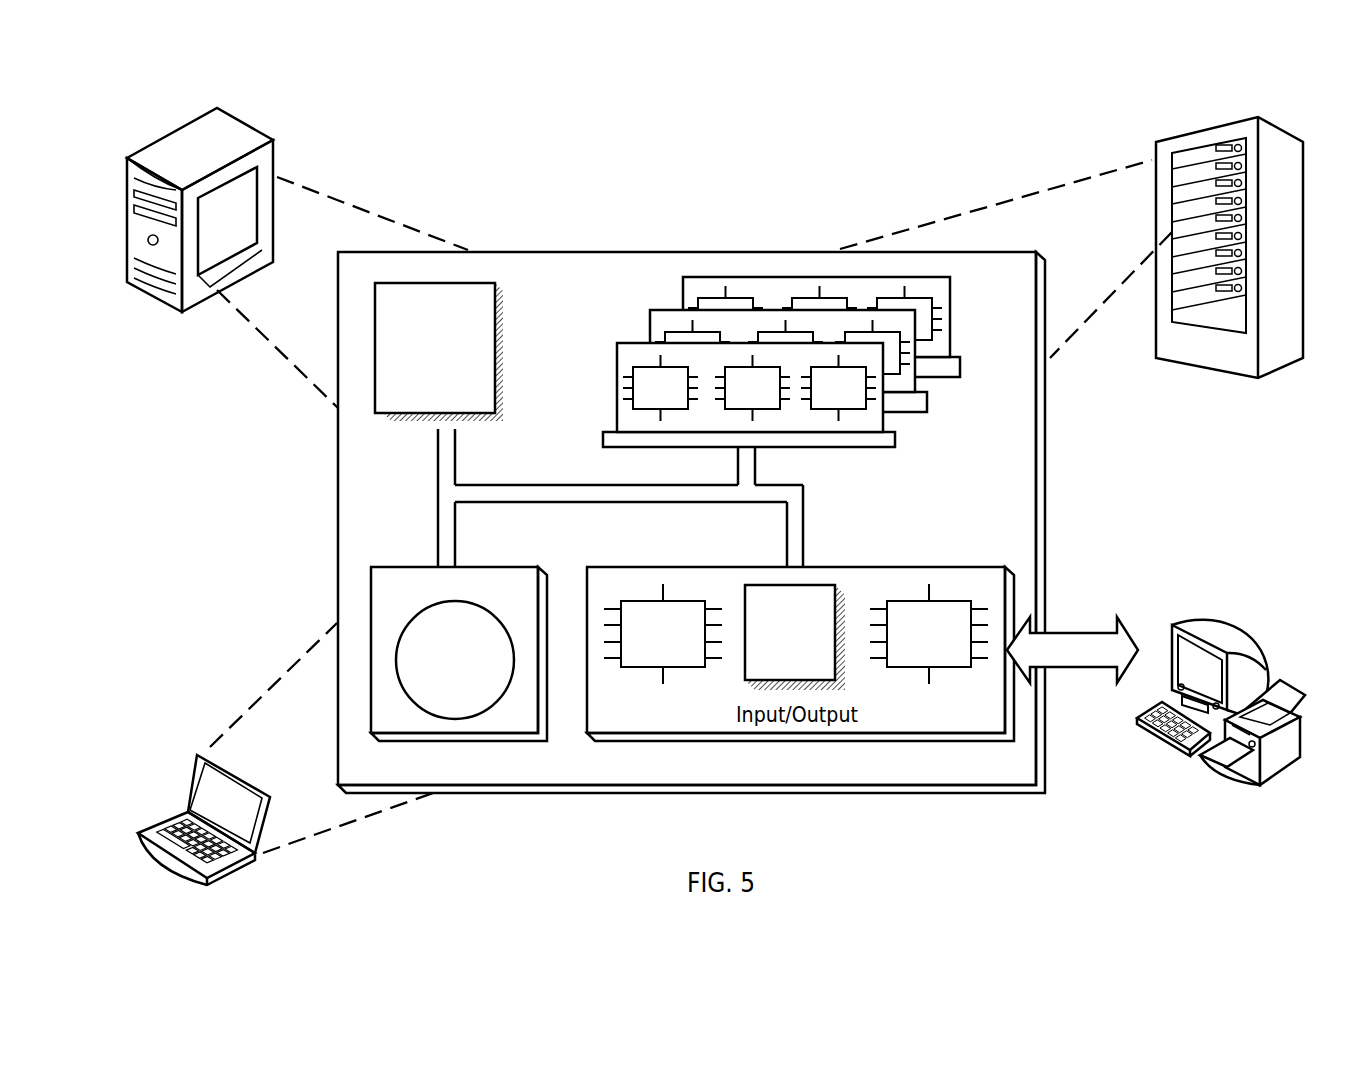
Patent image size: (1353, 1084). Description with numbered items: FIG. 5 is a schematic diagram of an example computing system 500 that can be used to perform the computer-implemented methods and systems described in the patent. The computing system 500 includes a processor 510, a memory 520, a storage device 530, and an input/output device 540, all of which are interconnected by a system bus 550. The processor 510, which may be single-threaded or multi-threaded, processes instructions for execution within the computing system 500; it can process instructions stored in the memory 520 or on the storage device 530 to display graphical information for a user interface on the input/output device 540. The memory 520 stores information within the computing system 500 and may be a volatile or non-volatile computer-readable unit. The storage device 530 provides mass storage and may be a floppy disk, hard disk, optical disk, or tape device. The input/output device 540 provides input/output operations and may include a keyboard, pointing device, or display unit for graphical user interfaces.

The computing system 500 is at (518, 131).
The processor 510 is at (439, 352).
The memory 520 is at (958, 413).
The storage device 530 is at (459, 654).
The input/output device 540 is at (1171, 622).
The system bus 550 is at (617, 503).